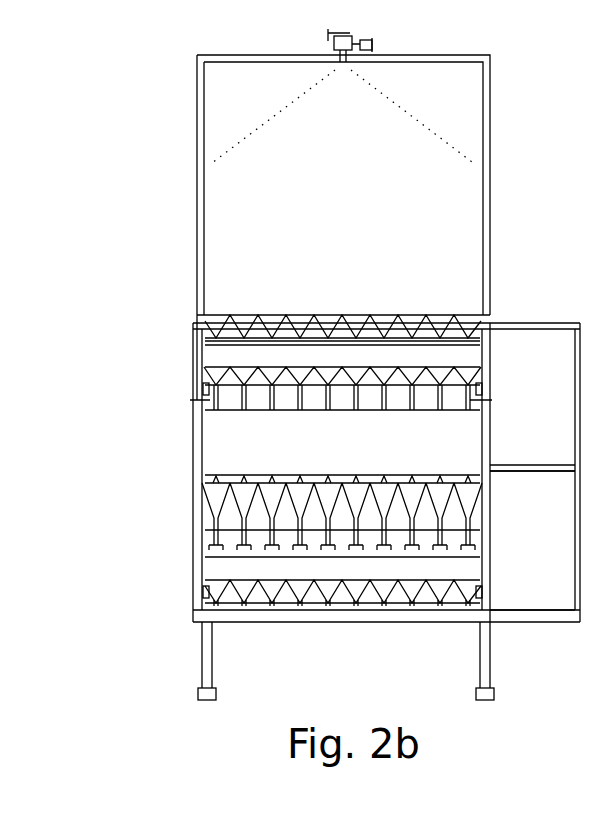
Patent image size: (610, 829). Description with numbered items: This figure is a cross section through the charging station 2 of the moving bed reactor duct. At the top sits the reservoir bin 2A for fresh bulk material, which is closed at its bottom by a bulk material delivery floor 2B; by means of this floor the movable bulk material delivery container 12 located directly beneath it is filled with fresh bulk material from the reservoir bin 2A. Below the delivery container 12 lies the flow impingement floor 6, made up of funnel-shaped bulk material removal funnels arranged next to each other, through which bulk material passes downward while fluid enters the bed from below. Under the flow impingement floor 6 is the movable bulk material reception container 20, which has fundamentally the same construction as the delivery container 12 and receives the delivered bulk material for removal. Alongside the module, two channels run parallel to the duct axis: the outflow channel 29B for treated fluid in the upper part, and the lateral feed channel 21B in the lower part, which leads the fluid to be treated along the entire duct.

The charging station 2 is at (253, 675).
The reservoir bin 2A is at (489, 188).
The bulk material delivery floor 2B is at (362, 313).
The bulk material delivery container 12 is at (246, 367).
The flow impingement floor 6 is at (250, 478).
The bulk material reception container 20 is at (250, 583).
The outflow channel 29B is at (565, 427).
The lateral feed channel 21B is at (565, 560).